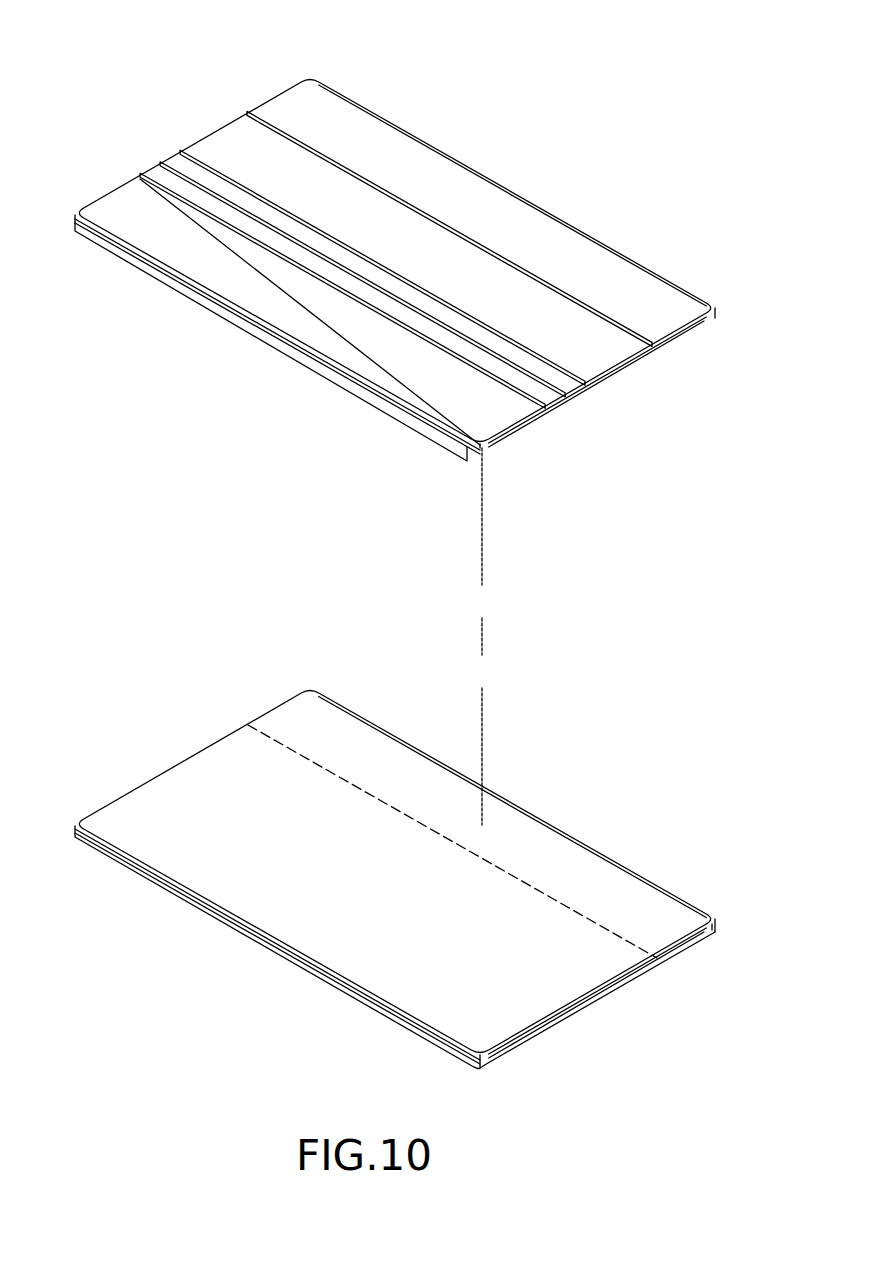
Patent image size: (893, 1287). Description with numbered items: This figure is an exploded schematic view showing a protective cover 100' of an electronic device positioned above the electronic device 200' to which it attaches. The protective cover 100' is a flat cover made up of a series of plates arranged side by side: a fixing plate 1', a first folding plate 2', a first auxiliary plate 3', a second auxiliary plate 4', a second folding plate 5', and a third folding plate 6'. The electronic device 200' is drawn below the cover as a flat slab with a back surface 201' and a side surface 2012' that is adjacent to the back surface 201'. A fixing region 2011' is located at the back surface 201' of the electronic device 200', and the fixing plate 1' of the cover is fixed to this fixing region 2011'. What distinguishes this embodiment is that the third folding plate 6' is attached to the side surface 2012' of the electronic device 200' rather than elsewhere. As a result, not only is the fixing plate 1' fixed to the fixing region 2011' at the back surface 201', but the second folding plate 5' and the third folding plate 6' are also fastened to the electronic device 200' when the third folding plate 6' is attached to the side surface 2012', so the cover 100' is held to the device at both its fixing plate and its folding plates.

The protective cover of the electronic device 100' is at (397, 233).
The fixing plate 1' is at (492, 236).
The first folding plate 2' is at (427, 274).
The first auxiliary plate 3' is at (392, 293).
The second auxiliary plate 4' is at (381, 313).
The second folding plate 5' is at (354, 318).
The third folding plate 6' is at (277, 338).
The electronic device 200' is at (394, 849).
The back surface 201' is at (597, 998).
The fixing region 2011' is at (555, 841).
The side surface 2012' is at (277, 947).